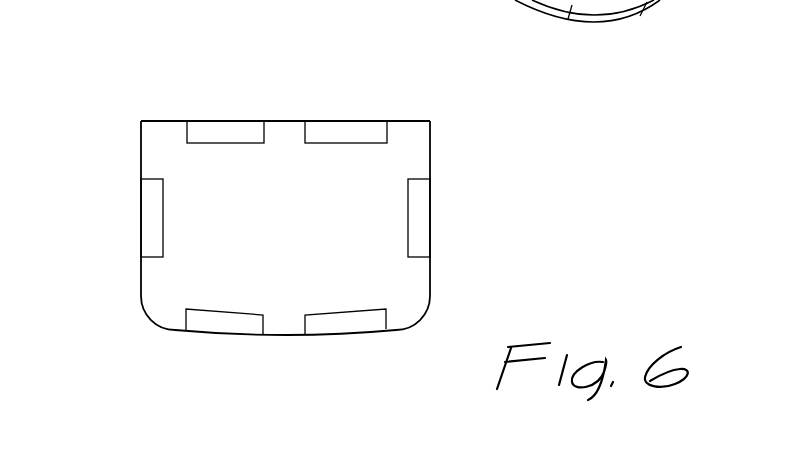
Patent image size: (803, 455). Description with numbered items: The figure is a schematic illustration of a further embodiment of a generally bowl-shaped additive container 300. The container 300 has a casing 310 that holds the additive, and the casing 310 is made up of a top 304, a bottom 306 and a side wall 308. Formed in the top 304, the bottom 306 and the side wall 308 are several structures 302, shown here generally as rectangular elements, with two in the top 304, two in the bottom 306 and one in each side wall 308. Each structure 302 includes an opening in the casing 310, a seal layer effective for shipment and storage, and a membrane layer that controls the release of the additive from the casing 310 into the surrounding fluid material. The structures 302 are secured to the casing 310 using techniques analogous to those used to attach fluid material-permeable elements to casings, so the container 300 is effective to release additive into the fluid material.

The bowl-shaped container 300 is at (292, 221).
The structures 302 is at (218, 132).
The top 304 is at (287, 119).
The bottom 306 is at (277, 336).
The side wall 308 is at (431, 274).
The casing 310 is at (116, 290).